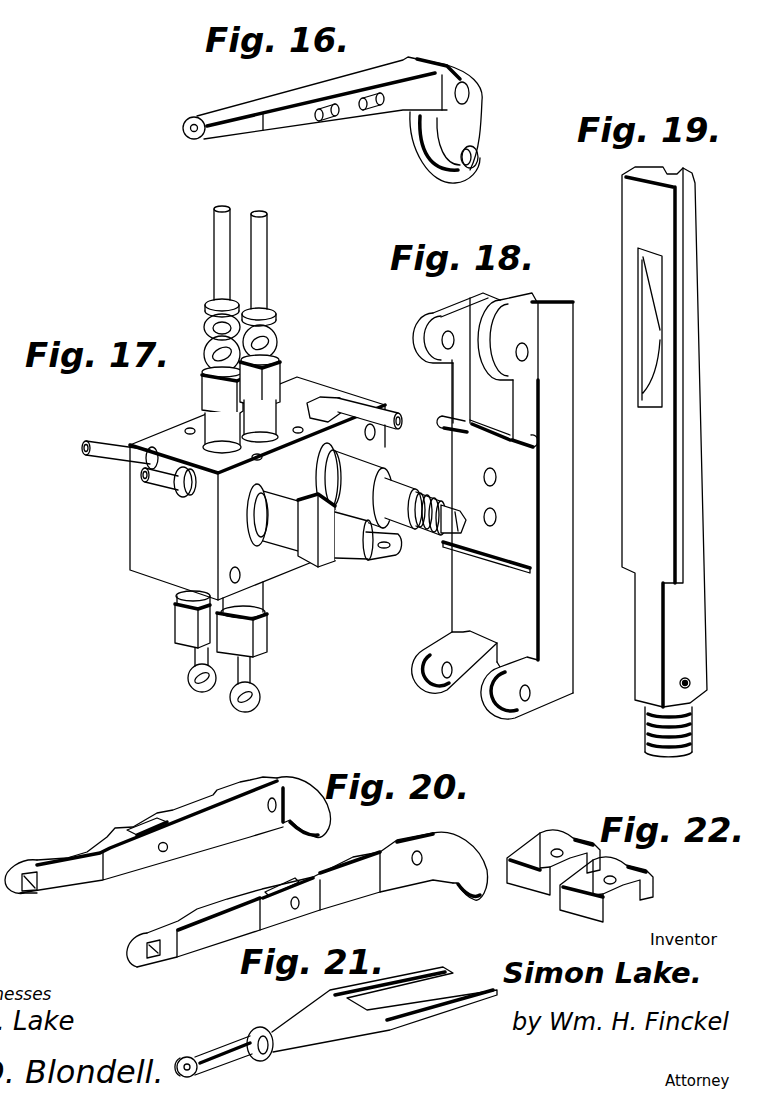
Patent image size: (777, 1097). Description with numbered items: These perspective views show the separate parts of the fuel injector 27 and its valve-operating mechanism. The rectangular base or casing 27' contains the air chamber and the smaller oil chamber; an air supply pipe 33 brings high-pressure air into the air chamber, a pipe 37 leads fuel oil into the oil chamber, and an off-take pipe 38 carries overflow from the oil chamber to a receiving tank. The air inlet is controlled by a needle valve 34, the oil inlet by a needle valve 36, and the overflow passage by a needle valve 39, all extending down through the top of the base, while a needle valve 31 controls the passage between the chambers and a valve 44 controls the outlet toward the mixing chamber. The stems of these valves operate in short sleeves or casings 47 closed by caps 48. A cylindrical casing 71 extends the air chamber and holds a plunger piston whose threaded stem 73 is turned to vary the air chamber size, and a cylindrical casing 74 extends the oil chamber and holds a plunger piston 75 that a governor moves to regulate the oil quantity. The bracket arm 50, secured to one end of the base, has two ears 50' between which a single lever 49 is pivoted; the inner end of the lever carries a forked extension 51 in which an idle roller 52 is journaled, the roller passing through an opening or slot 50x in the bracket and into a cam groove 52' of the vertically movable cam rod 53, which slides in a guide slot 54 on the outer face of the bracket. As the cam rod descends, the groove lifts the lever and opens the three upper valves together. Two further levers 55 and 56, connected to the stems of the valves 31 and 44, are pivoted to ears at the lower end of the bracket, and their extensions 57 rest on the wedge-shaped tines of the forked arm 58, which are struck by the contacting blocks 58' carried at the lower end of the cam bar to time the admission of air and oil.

In FIG. 16, the lever 49 is at (306, 120).
In FIG. 16, the forked extension 51 is at (477, 123).
In FIG. 16, the idle roller 52 is at (445, 162).
In FIG. 17, the fuel injector 27 is at (236, 488).
In FIG. 17, the base or casing 27' is at (174, 522).
In FIG. 17, the air supply pipe 33 is at (104, 436).
In FIG. 17, the off-take pipe 38 is at (158, 482).
In FIG. 17, the needle valve 34 is at (218, 318).
In FIG. 17, the needle valve 36 is at (272, 358).
In FIG. 17, the needle valve 39 is at (220, 371).
In FIG. 17, the caps 48 is at (268, 379).
In FIG. 17, the sleeves or casings 47 is at (213, 418).
In FIG. 17, the pipe 37 is at (338, 406).
In FIG. 17, the cylindrical casing 71 is at (369, 486).
In FIG. 17, the threaded stem 73 is at (427, 534).
In FIG. 17, the cylindrical casing 74 is at (274, 518).
In FIG. 17, the plunger piston 75 is at (348, 544).
In FIG. 17, the needle valve 31 is at (193, 650).
In FIG. 17, the valve 44 is at (254, 661).
In FIG. 18, the bracket arm 50 is at (512, 510).
In FIG. 18, the ears 50' is at (448, 358).
In FIG. 18, the opening or slot 50x is at (517, 300).
In FIG. 18, the guide slot 54 is at (487, 427).
In FIG. 19, the cam groove 52' is at (688, 327).
In FIG. 19, the cam rod 53 is at (664, 462).
In FIG. 20, the lever 55 is at (144, 835).
In FIG. 20, the lever 56 is at (250, 888).
In FIG. 20, the extensions 57 is at (330, 823).
In FIG. 21, the forked arm 58 is at (336, 1022).
In FIG. 22, the contacting blocks 58' is at (580, 879).